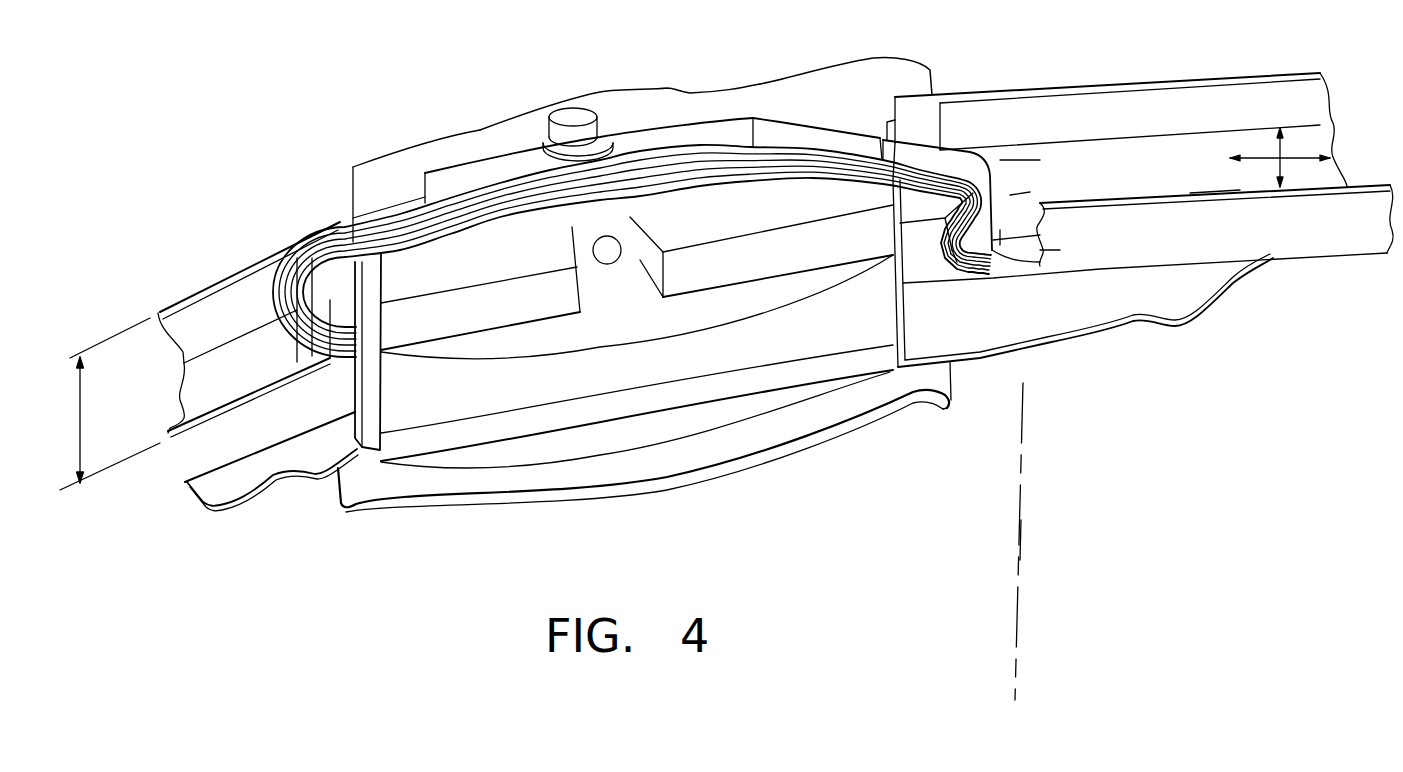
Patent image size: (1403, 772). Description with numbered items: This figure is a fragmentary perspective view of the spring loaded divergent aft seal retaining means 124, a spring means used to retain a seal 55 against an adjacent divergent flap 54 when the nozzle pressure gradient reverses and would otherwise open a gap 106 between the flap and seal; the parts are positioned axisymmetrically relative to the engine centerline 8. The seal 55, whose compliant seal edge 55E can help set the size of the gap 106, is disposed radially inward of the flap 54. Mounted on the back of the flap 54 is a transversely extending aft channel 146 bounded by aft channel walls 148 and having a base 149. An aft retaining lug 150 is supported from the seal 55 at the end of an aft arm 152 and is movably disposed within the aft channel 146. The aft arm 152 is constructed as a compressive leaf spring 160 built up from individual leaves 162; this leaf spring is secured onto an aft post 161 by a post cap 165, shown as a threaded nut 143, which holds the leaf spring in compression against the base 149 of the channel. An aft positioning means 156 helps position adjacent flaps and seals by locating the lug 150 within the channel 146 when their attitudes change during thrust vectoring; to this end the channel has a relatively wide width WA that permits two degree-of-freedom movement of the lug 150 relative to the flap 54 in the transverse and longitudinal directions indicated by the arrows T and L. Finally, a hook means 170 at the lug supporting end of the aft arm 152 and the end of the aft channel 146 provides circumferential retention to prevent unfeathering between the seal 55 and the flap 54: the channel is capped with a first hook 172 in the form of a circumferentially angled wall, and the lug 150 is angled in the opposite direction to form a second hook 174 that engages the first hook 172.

The divergent flap 54 is at (258, 487).
The seal 55 is at (650, 488).
The seal edge 55E is at (940, 410).
The gap 106 is at (947, 383).
The spring loaded divergent aft seal retaining means 124 is at (1096, 485).
The engine centerline 8 is at (1020, 543).
The threaded nut 143 is at (547, 130).
The aft channel 146 is at (1033, 184).
The aft channel walls 148 is at (1215, 193).
The base of the aft channel 149 is at (1018, 167).
The aft retaining lug 150 is at (972, 262).
The aft arm 152 is at (742, 128).
The aft positioning means 156 is at (405, 190).
The compressive leaf spring 160 is at (692, 127).
The aft post 161 is at (573, 245).
The leaves 162 is at (688, 166).
The post cap 165 is at (572, 110).
The hook means 170 is at (938, 246).
The first hook 172 is at (907, 207).
The second hook 174 is at (1035, 240).
The width of aft channel WA is at (84, 418).
The longitudinal direction L is at (1278, 150).
The transverse direction T is at (1305, 157).